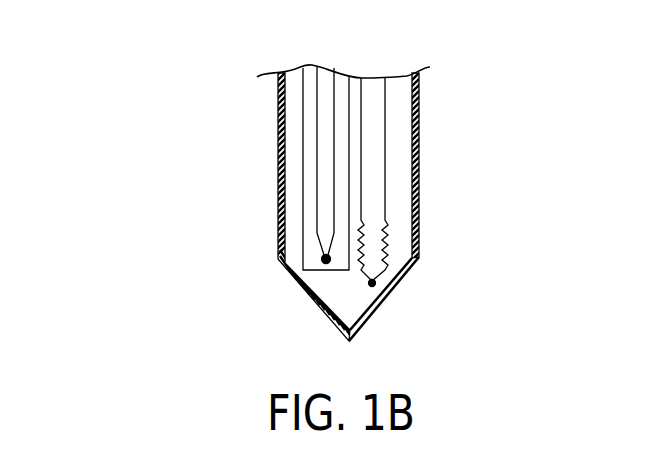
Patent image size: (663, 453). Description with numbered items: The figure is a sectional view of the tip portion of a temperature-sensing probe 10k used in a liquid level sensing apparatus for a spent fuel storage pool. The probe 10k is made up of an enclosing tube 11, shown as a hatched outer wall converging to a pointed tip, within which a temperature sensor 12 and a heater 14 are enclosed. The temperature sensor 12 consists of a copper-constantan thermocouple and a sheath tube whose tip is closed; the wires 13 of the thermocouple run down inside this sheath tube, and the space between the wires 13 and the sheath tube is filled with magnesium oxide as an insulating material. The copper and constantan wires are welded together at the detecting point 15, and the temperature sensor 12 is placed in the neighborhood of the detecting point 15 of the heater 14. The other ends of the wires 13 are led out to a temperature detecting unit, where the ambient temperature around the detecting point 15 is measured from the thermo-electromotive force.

The probe 10k is at (152, 92).
The enclosing tube 11 is at (278, 104).
The temperature sensor 12 is at (303, 139).
The wires 13 is at (334, 177).
The heater 14 is at (361, 162).
The detecting point 15 is at (326, 263).